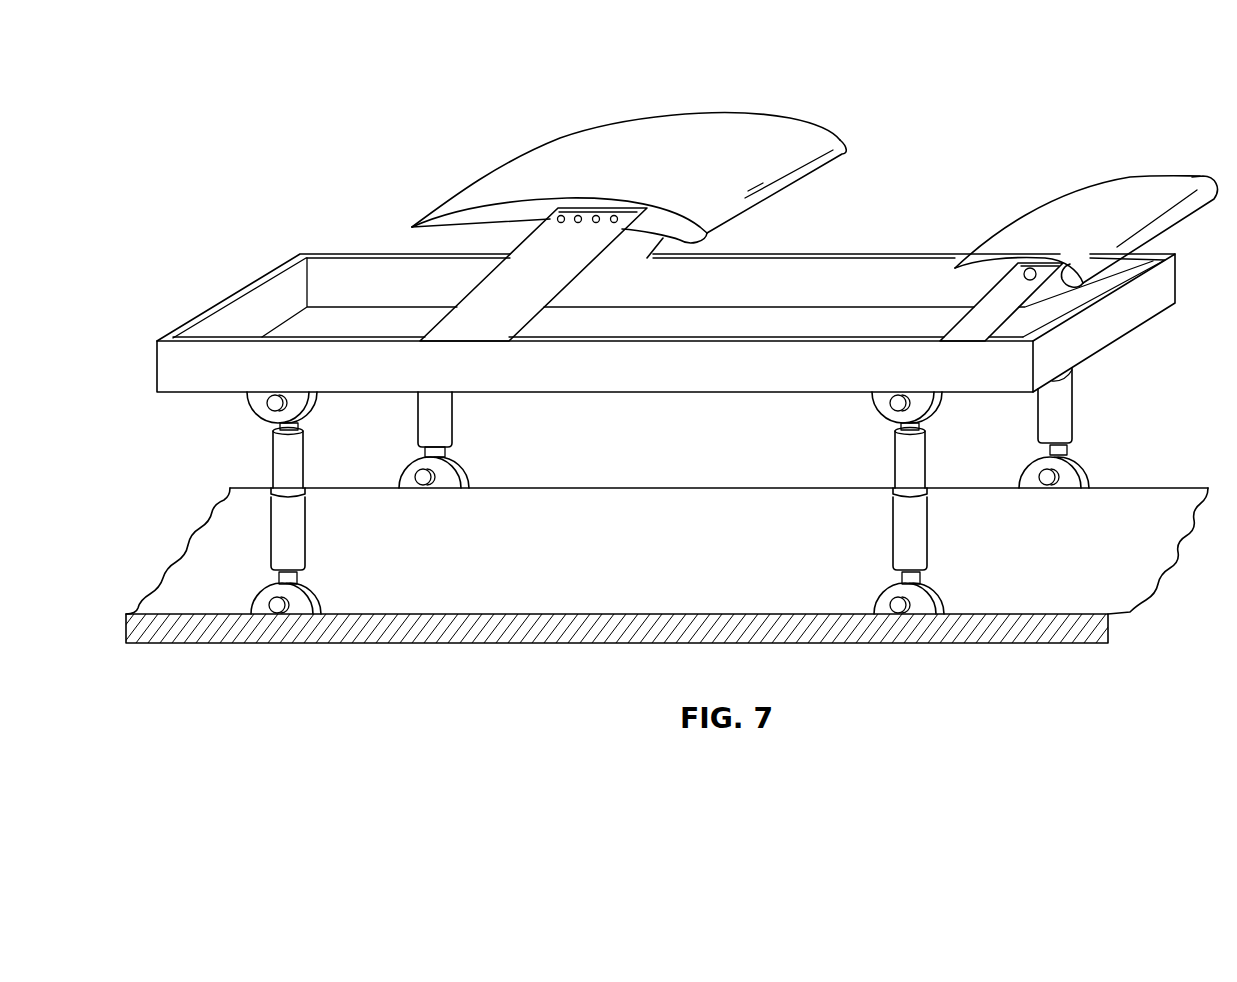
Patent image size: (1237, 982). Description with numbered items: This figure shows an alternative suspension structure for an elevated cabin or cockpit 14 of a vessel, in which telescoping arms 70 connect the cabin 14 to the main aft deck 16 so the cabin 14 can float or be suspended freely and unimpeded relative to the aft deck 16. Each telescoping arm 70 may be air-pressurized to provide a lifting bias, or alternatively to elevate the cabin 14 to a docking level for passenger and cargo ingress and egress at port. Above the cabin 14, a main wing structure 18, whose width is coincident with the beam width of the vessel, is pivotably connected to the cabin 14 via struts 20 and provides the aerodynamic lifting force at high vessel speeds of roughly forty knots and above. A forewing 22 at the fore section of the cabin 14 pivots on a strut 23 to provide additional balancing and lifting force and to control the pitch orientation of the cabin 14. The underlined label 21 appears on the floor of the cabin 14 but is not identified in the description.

The cabin 14 is at (852, 255).
The main aft deck 16 is at (626, 567).
The main wing structure 18 is at (777, 125).
The struts 20 is at (568, 271).
The tray floor 21 is at (738, 336).
The forewing 22 is at (1115, 192).
The strut 23 is at (992, 312).
The telescoping arms 70 is at (442, 428).